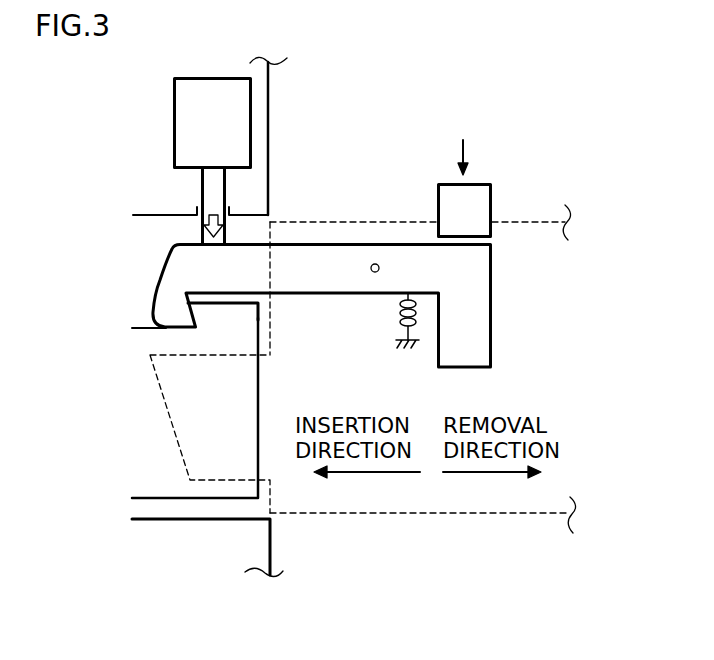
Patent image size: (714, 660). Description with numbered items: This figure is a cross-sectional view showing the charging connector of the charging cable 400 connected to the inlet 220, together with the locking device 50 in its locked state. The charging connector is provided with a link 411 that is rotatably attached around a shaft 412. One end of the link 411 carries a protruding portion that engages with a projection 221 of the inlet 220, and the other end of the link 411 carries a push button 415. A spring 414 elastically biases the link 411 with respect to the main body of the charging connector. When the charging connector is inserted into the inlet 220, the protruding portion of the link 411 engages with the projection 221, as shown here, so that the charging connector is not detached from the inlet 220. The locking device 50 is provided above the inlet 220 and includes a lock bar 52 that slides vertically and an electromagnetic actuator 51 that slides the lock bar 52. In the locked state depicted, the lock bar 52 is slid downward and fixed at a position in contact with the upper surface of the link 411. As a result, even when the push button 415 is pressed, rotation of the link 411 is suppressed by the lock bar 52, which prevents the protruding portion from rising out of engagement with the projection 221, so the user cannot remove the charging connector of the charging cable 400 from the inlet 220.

The locking device 50 is at (110, 110).
The electromagnetic actuator 51 is at (173, 124).
The lock bar 52 is at (202, 200).
The link 411 is at (155, 283).
The shaft 412 is at (375, 264).
The spring 414 is at (401, 318).
The push button 415 is at (481, 183).
The projection 221 is at (205, 315).
The inlet 220 is at (181, 499).
The charging cable 400 is at (471, 533).